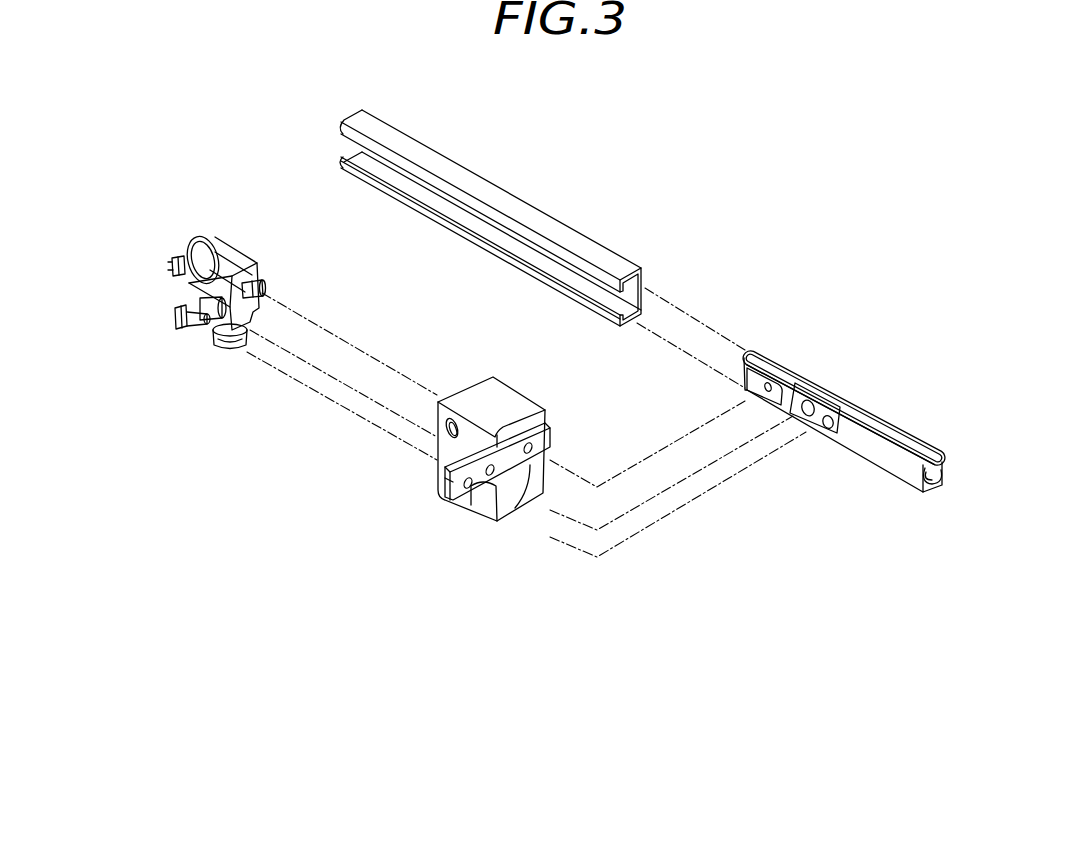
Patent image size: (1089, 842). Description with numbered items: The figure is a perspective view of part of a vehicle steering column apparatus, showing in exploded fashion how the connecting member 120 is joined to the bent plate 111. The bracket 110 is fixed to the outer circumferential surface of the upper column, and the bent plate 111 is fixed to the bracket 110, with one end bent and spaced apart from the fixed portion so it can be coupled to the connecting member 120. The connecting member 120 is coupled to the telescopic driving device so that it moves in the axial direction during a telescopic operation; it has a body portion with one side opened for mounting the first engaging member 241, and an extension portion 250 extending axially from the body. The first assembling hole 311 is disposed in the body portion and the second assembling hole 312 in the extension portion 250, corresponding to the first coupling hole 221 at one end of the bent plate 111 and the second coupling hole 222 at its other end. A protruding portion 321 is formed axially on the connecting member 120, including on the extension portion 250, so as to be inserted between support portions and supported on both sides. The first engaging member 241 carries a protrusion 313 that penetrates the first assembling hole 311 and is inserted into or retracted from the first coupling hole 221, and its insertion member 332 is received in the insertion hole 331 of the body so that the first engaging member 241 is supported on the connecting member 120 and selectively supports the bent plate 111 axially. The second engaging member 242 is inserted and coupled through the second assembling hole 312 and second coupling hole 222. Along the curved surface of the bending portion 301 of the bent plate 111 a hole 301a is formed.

The bracket 110 is at (593, 257).
The bent plate 111 is at (838, 393).
The connecting member 120 is at (467, 350).
The first coupling hole 221 is at (767, 392).
The second coupling hole 222 is at (828, 428).
The first engaging member 241 is at (233, 260).
The second engaging member 242 is at (176, 313).
The extension portion 250 is at (444, 460).
The bending portion 301 is at (750, 347).
The hole 301a is at (943, 477).
The first assembling hole 311 is at (530, 453).
The second assembling hole 312 is at (470, 489).
The protrusion 313 is at (264, 292).
The protruding portion 321 is at (545, 437).
The insertion hole 331 is at (445, 432).
The insertion member 332 is at (172, 267).